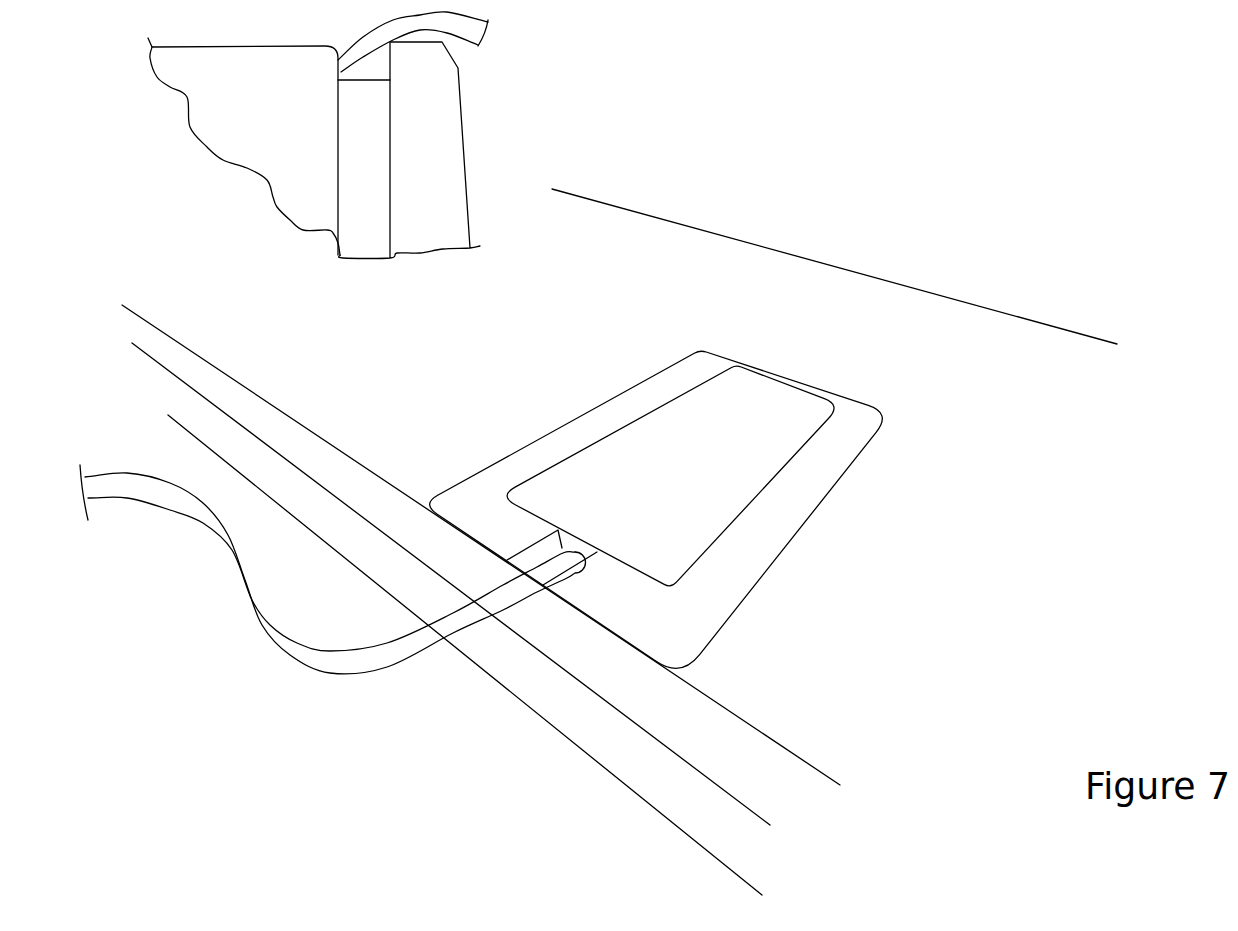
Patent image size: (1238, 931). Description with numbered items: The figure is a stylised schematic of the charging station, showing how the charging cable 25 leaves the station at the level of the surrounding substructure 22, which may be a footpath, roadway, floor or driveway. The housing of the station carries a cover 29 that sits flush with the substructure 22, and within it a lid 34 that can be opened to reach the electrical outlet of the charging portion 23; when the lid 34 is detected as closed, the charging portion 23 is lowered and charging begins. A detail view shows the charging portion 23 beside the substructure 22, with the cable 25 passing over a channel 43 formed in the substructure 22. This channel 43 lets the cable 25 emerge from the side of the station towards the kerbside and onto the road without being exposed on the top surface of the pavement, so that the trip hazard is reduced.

The substructure 22 is at (940, 327).
The charging portion 23 is at (310, 126).
The channel 43 is at (377, 68).
The charging cable 25 is at (488, 22).
The cover 29 is at (727, 598).
The lid 34 is at (745, 463).